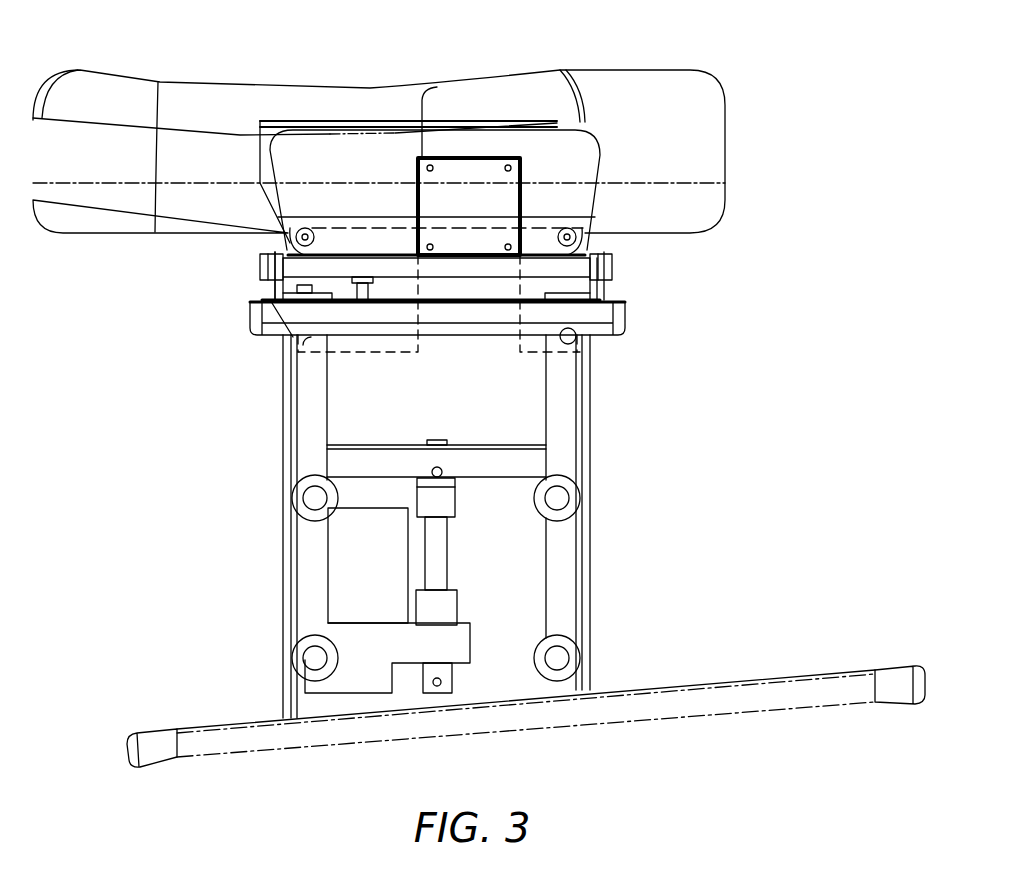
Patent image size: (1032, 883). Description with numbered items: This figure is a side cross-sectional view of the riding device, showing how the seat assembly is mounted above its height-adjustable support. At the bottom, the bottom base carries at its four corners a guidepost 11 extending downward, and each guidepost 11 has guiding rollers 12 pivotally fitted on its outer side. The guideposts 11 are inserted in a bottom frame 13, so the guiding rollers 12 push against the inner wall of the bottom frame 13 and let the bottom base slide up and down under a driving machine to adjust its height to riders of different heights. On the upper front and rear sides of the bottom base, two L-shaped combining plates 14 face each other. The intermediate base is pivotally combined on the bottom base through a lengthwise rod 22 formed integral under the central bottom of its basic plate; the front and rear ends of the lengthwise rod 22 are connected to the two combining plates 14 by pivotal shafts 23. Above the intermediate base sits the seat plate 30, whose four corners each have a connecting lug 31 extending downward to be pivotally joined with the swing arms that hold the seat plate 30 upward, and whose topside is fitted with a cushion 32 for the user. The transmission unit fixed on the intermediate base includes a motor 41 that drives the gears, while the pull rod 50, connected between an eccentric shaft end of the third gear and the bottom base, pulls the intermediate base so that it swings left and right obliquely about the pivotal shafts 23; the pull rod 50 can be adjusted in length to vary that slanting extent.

The guidepost 11 is at (560, 410).
The guiding roller 12 is at (560, 499).
The bottom frame 13 is at (710, 708).
The L-shaped combining plate 14 is at (272, 287).
The lengthwise rod 22 is at (580, 270).
The pivotal shaft 23 is at (260, 267).
The seat plate 30 is at (375, 127).
The connecting lug 31 is at (262, 150).
The cushion 32 is at (713, 90).
The motor 41 is at (470, 175).
The pull rod 50 is at (330, 302).